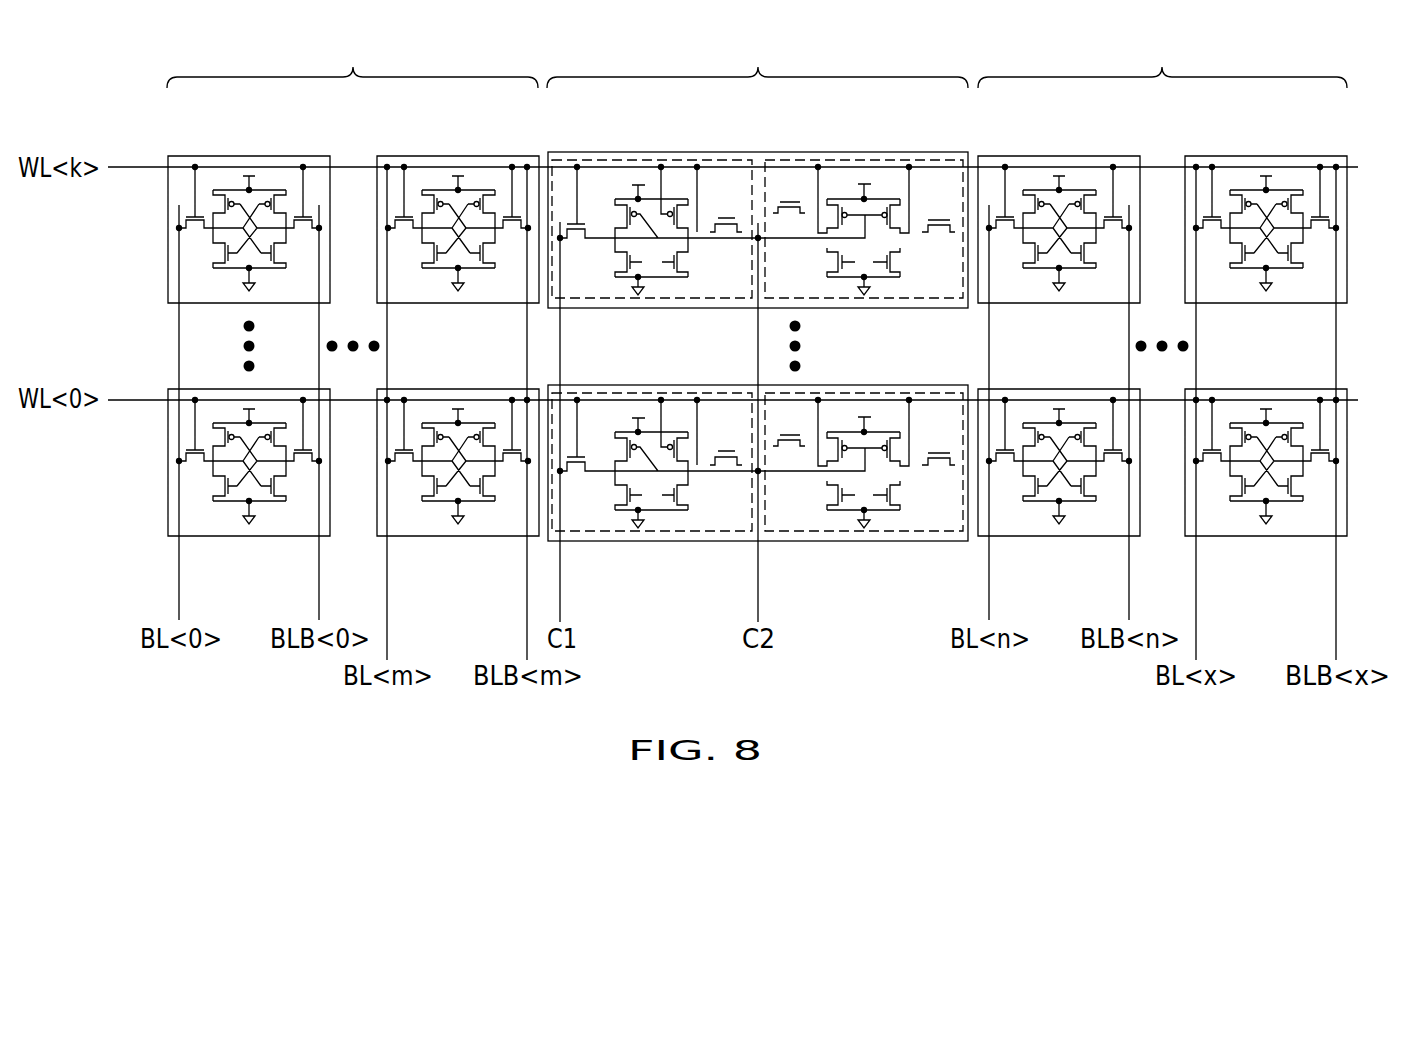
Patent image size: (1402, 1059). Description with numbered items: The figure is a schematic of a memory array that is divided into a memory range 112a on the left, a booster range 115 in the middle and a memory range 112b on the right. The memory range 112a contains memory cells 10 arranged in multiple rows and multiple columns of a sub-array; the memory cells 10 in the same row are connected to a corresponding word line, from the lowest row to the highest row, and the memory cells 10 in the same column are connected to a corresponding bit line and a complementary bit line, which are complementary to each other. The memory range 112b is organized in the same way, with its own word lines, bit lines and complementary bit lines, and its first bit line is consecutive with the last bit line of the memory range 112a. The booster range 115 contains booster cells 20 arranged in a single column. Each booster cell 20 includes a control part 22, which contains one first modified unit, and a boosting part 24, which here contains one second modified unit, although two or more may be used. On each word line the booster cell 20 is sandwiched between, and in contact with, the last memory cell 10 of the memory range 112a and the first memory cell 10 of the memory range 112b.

The memory cell 10 is at (757, 346).
The memory range 112a is at (352, 61).
The memory range 112b is at (1162, 61).
The booster range 115 is at (757, 61).
The booster cell 20 is at (758, 328).
The control part 22 is at (652, 347).
The boosting part 24 is at (864, 312).